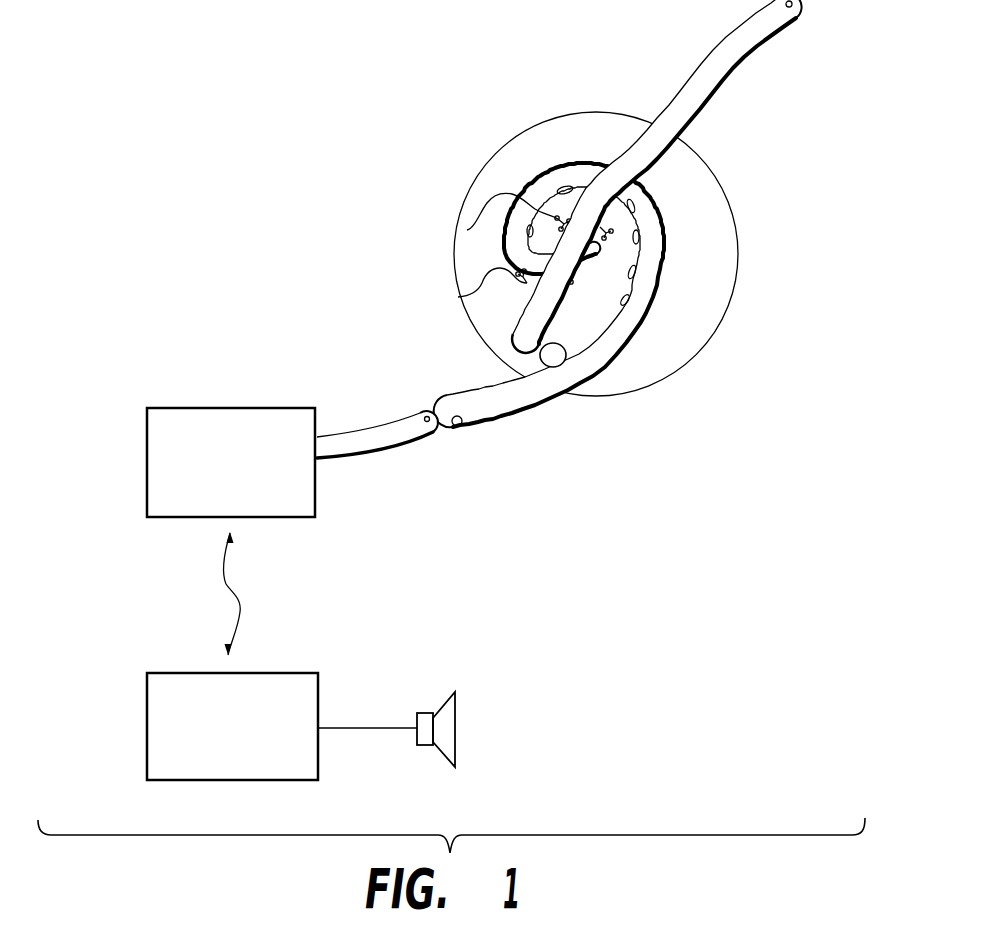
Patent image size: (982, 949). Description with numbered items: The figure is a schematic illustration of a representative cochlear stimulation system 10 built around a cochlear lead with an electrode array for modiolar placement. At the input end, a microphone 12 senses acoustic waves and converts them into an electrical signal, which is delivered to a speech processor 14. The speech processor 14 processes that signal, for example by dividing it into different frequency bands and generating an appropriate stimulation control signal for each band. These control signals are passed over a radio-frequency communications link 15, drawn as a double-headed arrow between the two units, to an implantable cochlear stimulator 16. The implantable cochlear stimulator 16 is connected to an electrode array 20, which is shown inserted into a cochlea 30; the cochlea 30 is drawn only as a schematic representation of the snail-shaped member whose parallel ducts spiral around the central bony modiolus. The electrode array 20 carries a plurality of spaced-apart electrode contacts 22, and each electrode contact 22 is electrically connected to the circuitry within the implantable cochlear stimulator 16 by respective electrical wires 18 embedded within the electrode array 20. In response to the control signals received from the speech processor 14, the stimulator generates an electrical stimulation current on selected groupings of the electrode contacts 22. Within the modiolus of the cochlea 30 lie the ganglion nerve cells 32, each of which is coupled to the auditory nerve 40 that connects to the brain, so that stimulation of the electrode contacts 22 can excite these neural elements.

The cochlear stimulation system 10 is at (233, 167).
The microphone 12 is at (457, 720).
The speech processor 14 is at (147, 713).
The radio-frequency communications link 15 is at (243, 590).
The implantable cochlear stimulator 16 is at (147, 465).
The electrical wires 18 is at (397, 447).
The electrode array 20 is at (653, 302).
The electrode contacts 22 is at (567, 187).
The cochlea 30 is at (737, 233).
The ganglion nerve cells 32 is at (467, 230).
The auditory nerve 40 is at (755, 58).